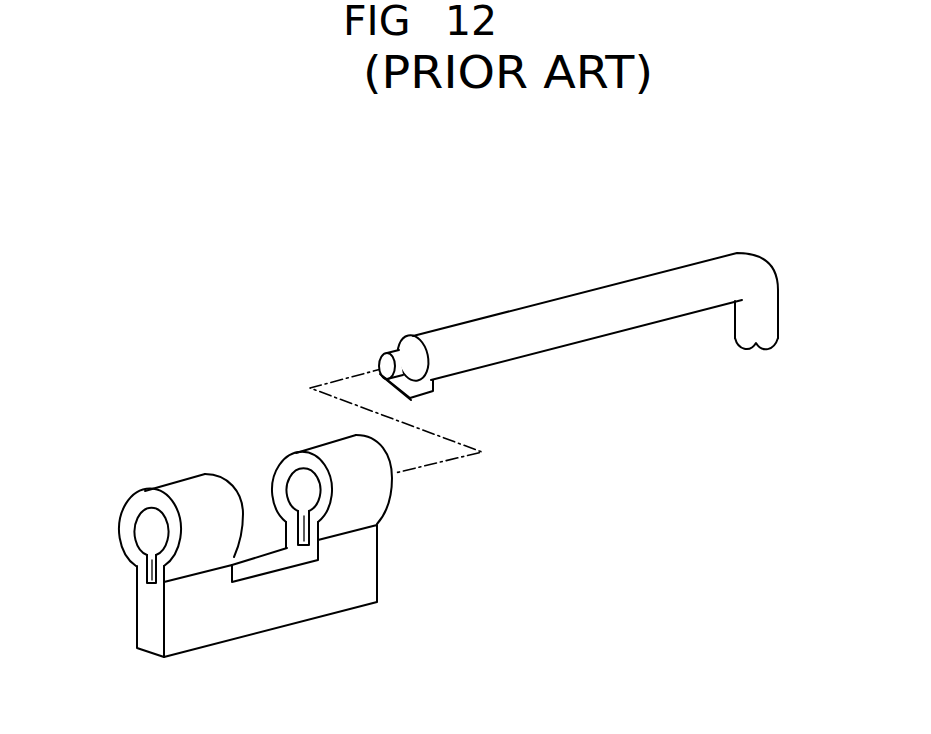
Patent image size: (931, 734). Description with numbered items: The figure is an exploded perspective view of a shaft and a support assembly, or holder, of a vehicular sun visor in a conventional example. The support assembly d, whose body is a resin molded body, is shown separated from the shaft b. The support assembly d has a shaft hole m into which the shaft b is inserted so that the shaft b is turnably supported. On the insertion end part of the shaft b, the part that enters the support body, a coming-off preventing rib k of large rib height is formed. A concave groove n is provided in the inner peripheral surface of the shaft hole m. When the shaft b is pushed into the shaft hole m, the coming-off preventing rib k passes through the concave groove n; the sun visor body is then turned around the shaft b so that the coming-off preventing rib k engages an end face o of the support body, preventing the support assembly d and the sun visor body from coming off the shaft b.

The shaft b is at (593, 290).
The coming-off preventing rib k is at (437, 386).
The support assembly d is at (216, 523).
The end face o is at (142, 610).
The shaft hole m is at (146, 534).
The concave groove n is at (153, 571).